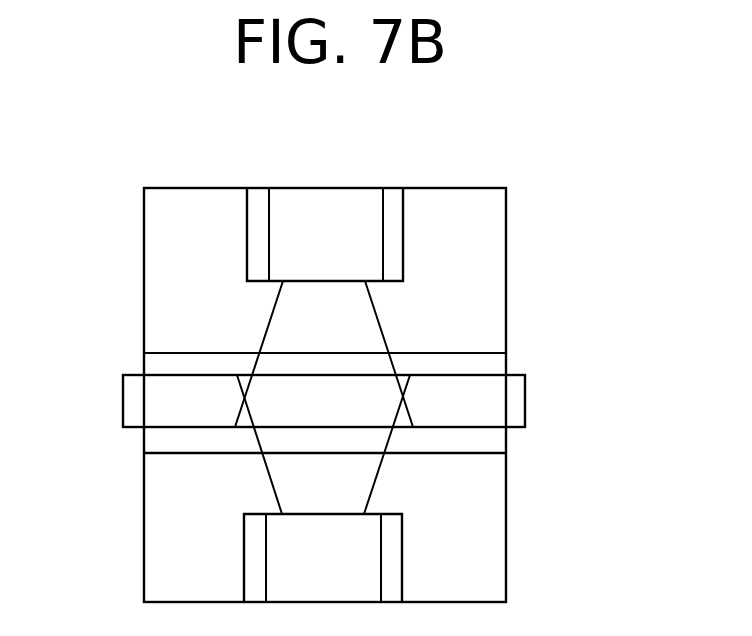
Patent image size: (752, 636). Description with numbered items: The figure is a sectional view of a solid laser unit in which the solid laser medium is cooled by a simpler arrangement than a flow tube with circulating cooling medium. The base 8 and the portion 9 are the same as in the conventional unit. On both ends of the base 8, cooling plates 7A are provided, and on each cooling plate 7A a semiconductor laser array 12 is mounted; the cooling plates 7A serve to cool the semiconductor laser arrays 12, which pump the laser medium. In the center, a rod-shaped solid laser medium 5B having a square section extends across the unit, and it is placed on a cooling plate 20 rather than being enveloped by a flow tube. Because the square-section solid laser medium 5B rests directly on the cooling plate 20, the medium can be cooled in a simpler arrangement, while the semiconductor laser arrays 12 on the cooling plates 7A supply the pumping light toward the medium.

The base 8 is at (490, 218).
The semiconductor laser array 12 is at (340, 200).
The cooling plate 7A is at (257, 205).
The solid laser medium 5B is at (512, 405).
The portion 9 is at (264, 340).
The cooling plate 20 is at (412, 368).